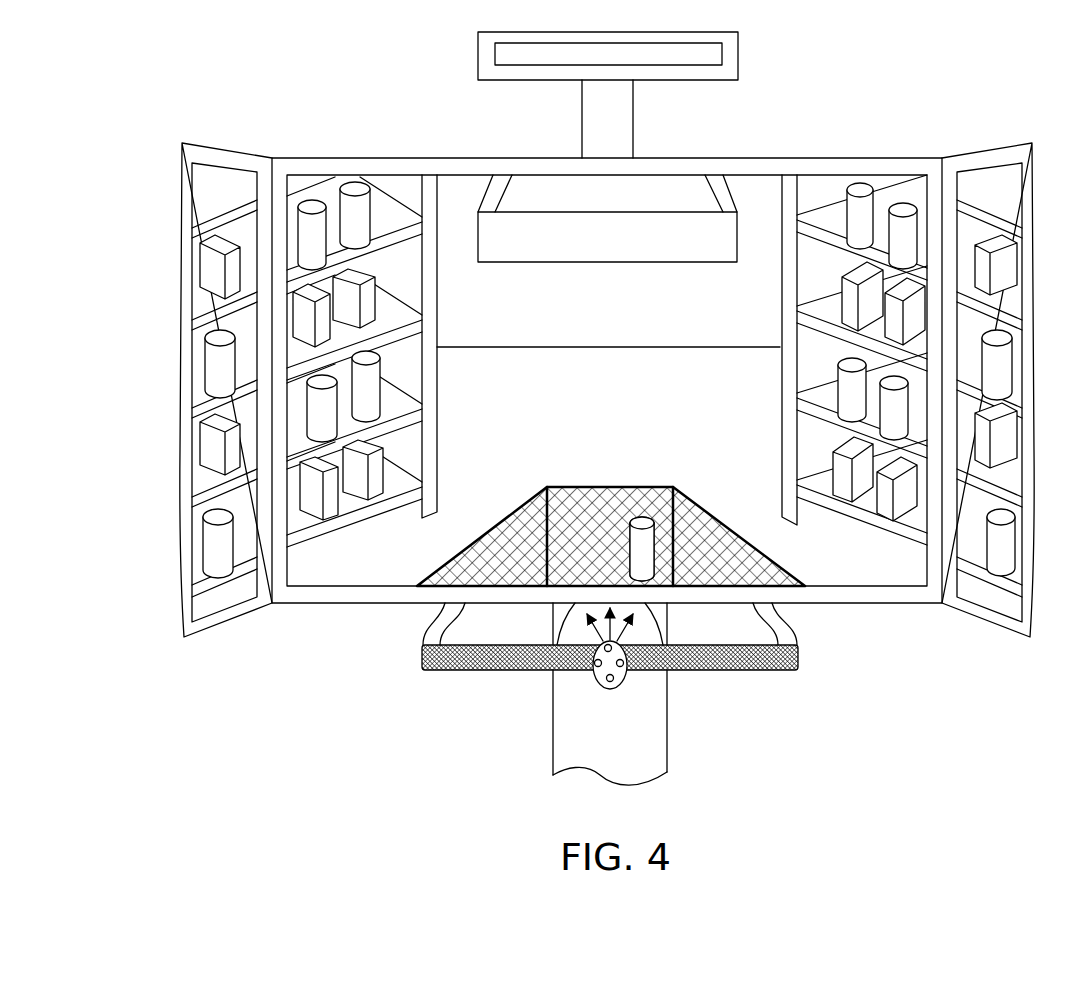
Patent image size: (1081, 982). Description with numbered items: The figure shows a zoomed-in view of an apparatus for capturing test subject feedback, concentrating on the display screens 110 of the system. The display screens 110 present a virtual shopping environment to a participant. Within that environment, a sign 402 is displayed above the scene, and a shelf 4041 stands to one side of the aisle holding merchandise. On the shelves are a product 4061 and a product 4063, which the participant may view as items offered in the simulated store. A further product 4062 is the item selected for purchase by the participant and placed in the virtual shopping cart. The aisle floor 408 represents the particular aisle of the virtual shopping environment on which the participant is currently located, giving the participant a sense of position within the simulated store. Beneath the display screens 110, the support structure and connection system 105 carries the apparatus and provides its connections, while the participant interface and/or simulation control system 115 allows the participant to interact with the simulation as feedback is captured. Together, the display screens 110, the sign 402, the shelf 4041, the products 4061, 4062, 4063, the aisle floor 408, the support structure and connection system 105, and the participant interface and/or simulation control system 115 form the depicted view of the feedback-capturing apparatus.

The display screens 110 is at (232, 146).
The sign 402 is at (582, 262).
The shelf 4041 is at (437, 296).
The product 4061 is at (437, 451).
The product 4062 is at (837, 380).
The product 4063 is at (780, 322).
The aisle floor 408 is at (640, 412).
The support structure and connection system 105 is at (553, 732).
The participant interface and/or simulation control system 115 is at (720, 670).